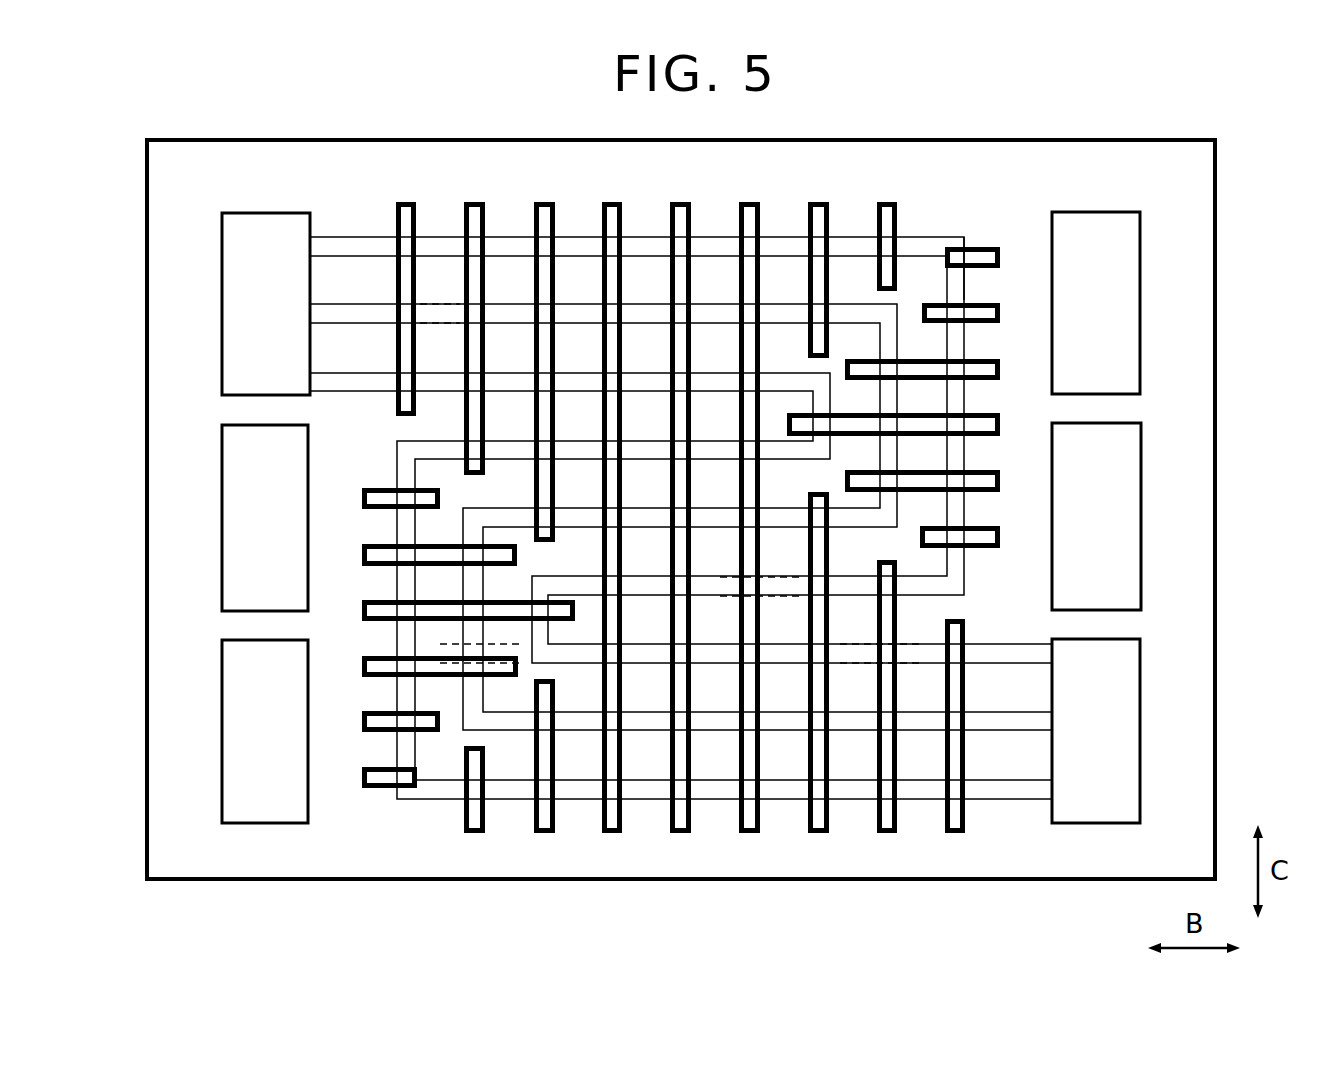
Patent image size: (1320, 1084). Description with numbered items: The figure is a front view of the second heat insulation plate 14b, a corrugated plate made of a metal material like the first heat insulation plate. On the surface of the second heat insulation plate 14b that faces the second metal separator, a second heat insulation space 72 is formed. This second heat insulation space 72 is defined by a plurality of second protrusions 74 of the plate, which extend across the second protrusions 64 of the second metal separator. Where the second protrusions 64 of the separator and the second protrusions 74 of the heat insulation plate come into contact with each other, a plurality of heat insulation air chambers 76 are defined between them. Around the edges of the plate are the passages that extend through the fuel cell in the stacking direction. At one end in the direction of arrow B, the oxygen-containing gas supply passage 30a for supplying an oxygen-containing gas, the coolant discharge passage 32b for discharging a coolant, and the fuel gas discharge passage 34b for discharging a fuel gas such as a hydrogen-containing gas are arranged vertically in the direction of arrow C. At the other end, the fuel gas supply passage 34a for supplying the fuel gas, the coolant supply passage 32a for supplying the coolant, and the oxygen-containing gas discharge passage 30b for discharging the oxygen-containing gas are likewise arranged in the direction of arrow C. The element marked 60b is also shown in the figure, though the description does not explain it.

The second heat insulation plate 14b is at (366, 80).
The second heat insulation space 72 is at (681, 480).
The second protrusions 74 is at (748, 215).
The heat insulation air chambers 76 is at (440, 318).
The second protrusions 64 is at (640, 255).
The wiring 60b is at (918, 245).
The fuel gas supply passage 34a is at (266, 304).
The fuel gas discharge passage 34b is at (1096, 731).
The coolant supply passage 32a is at (265, 518).
The coolant discharge passage 32b is at (1096, 516).
The oxygen-containing gas supply passage 30a is at (1096, 303).
The oxygen-containing gas discharge passage 30b is at (265, 731).